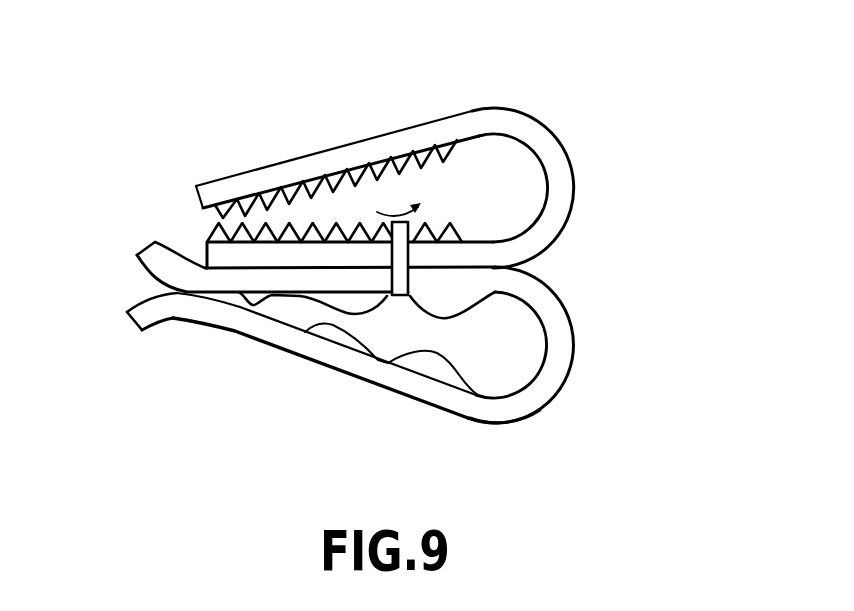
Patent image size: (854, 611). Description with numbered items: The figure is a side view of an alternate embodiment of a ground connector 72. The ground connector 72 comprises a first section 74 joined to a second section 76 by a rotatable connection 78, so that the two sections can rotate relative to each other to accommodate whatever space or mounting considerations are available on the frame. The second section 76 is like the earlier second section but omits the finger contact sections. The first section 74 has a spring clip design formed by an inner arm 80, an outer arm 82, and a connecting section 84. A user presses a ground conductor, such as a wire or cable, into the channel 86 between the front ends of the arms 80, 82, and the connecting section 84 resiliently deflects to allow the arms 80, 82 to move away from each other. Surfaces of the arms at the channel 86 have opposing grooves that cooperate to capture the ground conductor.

The ground connector 72 is at (222, 92).
The first section 74 is at (528, 428).
The second section 76 is at (441, 118).
The rotatable connection 78 is at (410, 262).
The inner arm 80 is at (177, 253).
The outer arm 82 is at (283, 352).
The connecting section 84 is at (577, 357).
The channel 86 is at (510, 329).